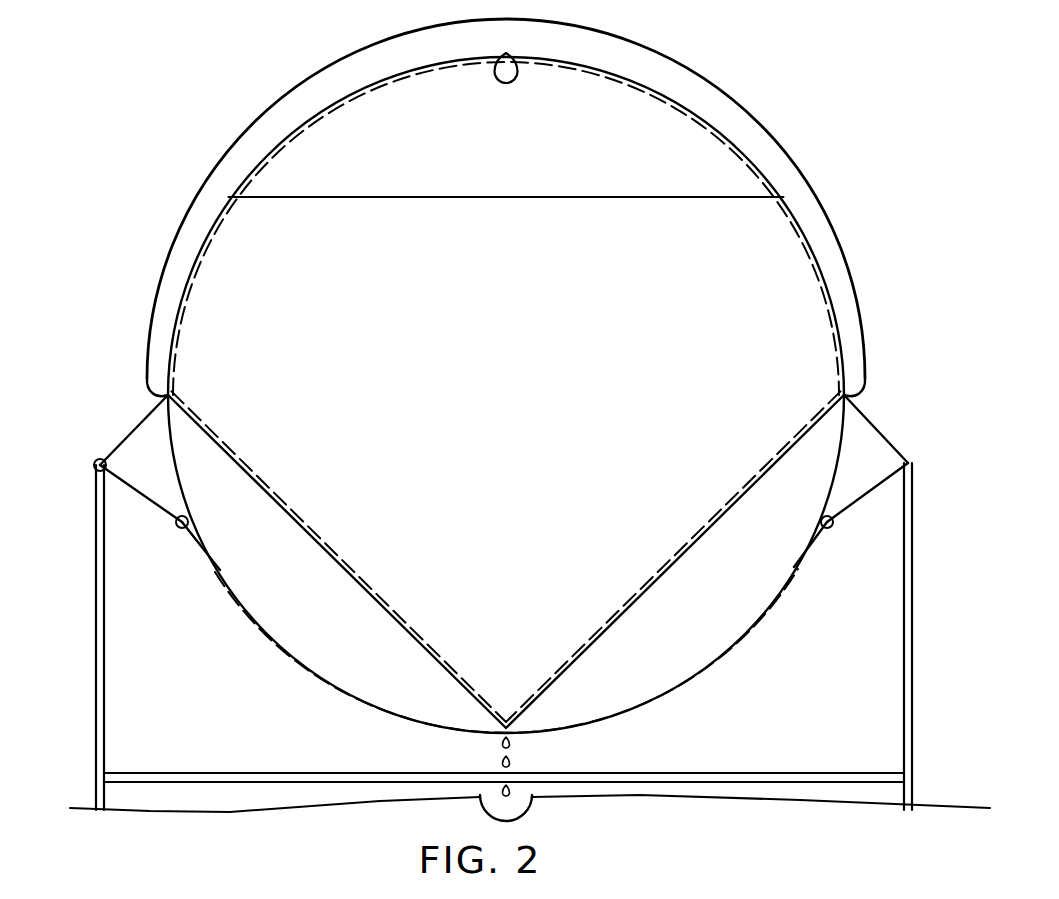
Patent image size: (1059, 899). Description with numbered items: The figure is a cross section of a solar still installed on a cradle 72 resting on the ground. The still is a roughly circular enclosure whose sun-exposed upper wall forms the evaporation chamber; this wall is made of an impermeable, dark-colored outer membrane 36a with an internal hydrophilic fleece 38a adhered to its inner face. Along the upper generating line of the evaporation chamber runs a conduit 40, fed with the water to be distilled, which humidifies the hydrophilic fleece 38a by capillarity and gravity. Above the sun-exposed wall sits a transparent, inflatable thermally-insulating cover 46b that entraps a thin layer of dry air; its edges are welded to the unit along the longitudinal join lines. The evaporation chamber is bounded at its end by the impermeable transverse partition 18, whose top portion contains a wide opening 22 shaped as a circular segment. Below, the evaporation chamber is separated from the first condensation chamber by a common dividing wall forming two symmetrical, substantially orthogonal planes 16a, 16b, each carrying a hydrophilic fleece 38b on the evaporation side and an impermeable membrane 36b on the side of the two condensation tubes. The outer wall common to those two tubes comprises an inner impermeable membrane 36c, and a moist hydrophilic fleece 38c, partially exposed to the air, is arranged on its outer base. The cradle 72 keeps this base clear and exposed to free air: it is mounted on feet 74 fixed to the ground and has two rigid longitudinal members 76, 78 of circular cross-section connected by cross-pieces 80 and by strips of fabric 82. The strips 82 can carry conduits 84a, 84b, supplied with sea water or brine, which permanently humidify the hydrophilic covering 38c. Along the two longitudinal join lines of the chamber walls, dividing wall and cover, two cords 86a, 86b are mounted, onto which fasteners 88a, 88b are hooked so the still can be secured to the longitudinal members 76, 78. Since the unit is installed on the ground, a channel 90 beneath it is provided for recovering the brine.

The plane of common dividing wall 16a is at (303, 533).
The plane of common dividing wall 16b is at (708, 522).
The left-hand transverse end partition 18 is at (495, 399).
The wide opening 22 is at (521, 176).
The outer membrane 36a is at (755, 157).
The impermeable membrane 36b is at (347, 577).
The impermeable membrane 36c is at (321, 669).
The internal hydrophilic fleece 38a is at (713, 135).
The hydrophilic fleece 38b is at (288, 505).
The moist hydrophilic fleece 38c is at (345, 694).
The conduit 40 is at (471, 58).
The transparent inflatable thermally-insulating cover 46b is at (491, 207).
The cradle 72 is at (488, 580).
The feet 74 is at (105, 685).
The longitudinal member 76 is at (96, 470).
The longitudinal member 78 is at (905, 469).
The cross-pieces 80 is at (758, 772).
The strips of fabric 82 is at (155, 513).
The conduit 84a is at (178, 514).
The conduit 84b is at (831, 515).
The cord 86a is at (152, 383).
The cord 86b is at (857, 376).
The fastener 88a is at (135, 428).
The fastener 88b is at (877, 422).
The channel 90 is at (520, 808).